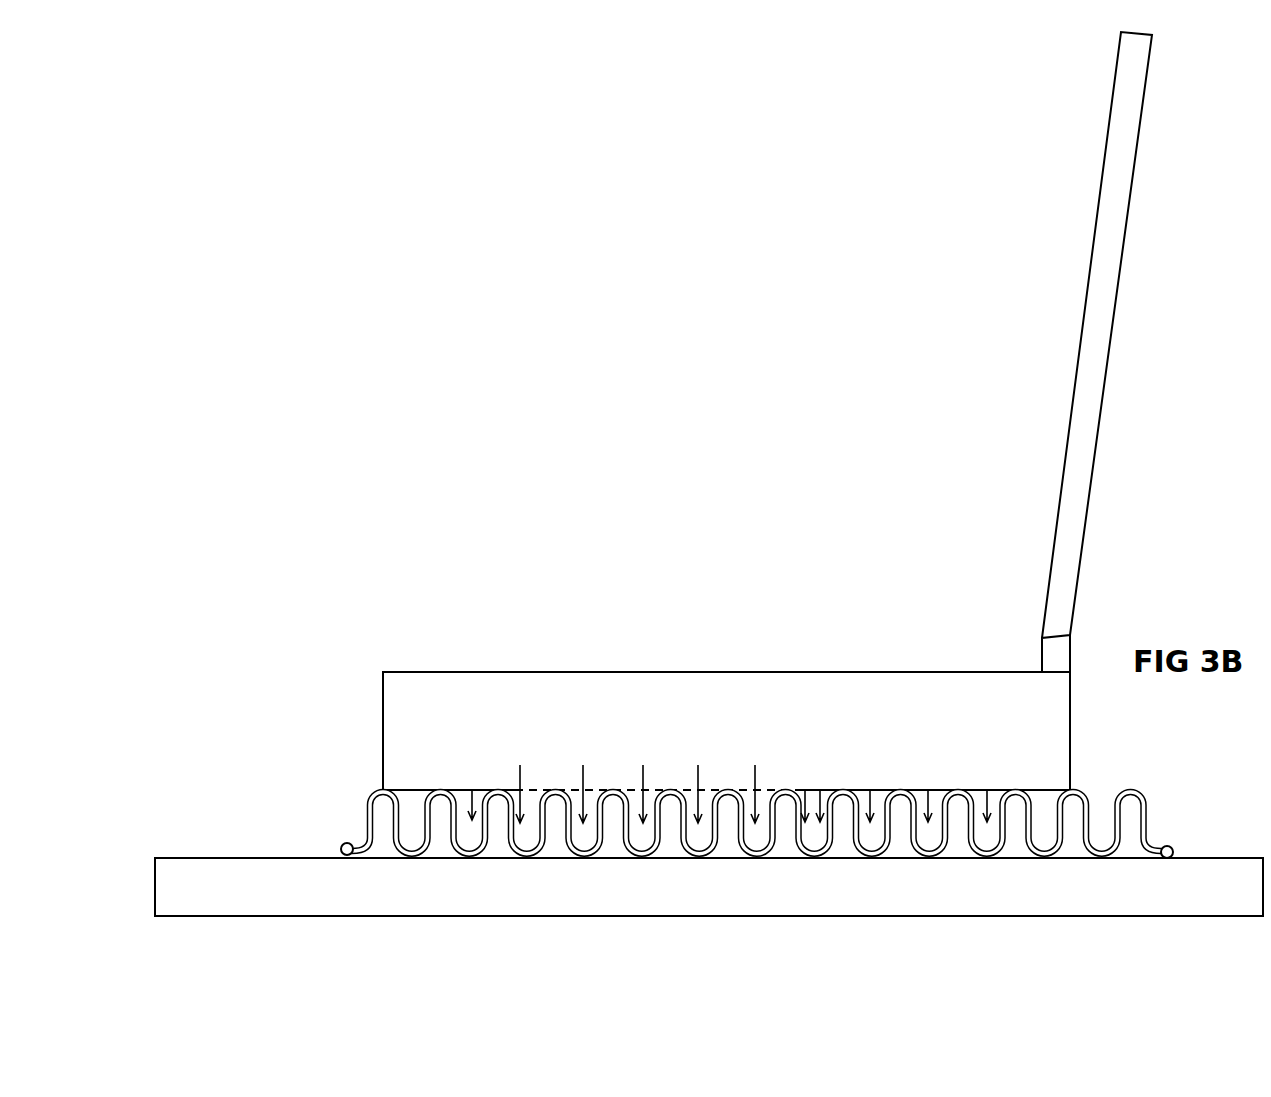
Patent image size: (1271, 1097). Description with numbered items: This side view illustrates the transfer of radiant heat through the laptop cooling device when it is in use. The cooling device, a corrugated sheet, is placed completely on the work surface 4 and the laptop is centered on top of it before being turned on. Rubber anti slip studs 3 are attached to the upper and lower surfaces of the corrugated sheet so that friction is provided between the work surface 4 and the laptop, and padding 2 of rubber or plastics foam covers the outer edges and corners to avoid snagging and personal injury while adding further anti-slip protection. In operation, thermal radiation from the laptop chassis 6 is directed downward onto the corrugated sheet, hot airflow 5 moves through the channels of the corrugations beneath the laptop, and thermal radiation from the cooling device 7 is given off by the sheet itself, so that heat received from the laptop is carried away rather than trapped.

The padding 2 is at (1172, 848).
The anti slip studs 3 is at (1017, 790).
The work surface 4 is at (284, 870).
The hot airflow 5 is at (518, 758).
The thermal radiation from laptop chassis 6 is at (1012, 780).
The thermal radiation from cooling device 7 is at (368, 797).